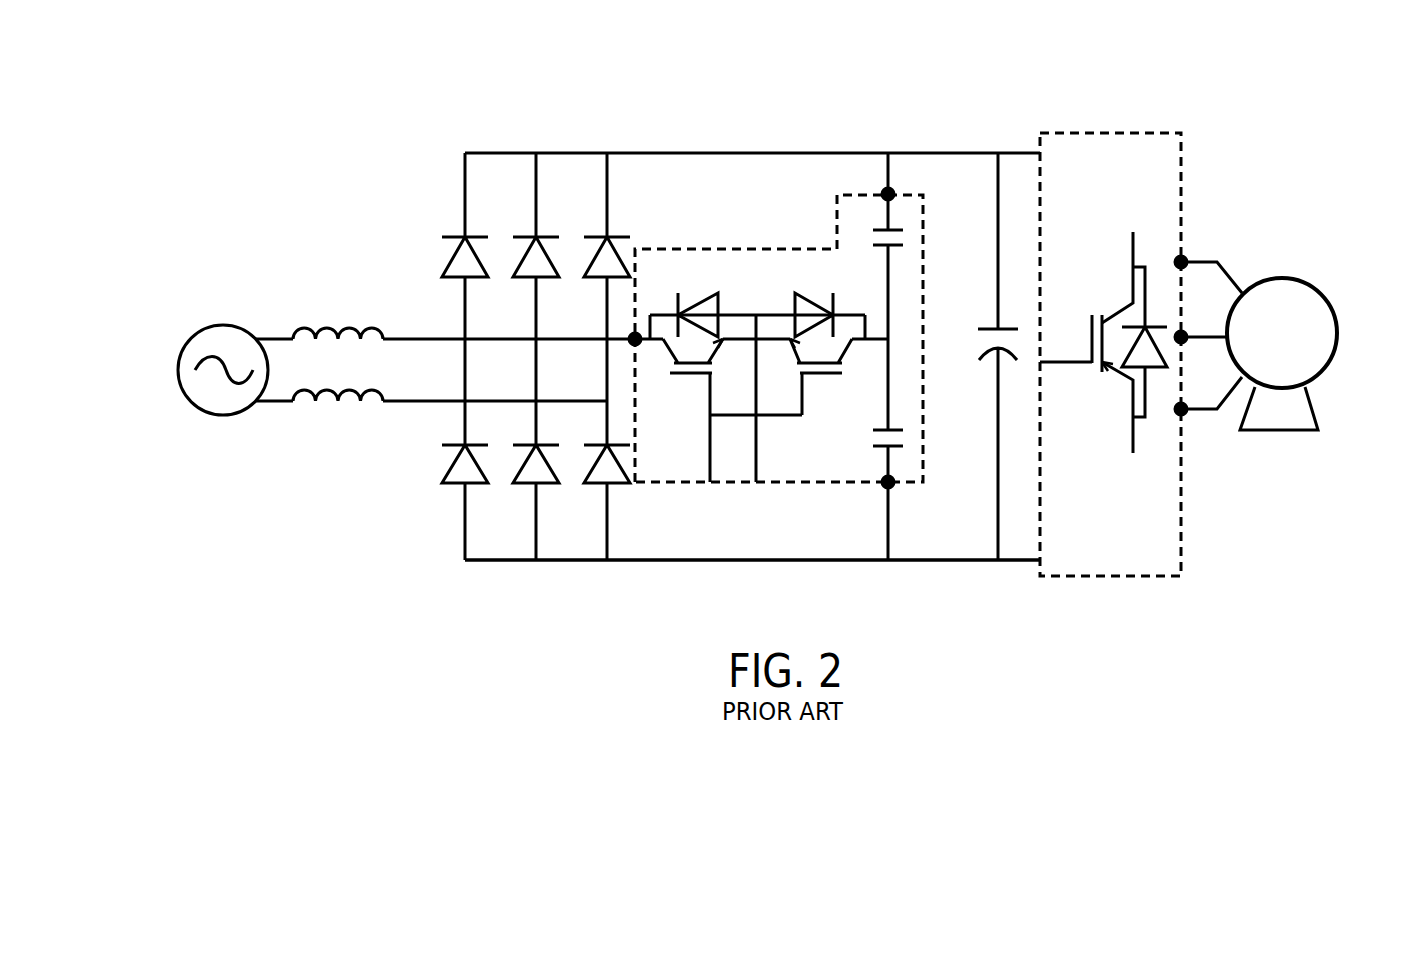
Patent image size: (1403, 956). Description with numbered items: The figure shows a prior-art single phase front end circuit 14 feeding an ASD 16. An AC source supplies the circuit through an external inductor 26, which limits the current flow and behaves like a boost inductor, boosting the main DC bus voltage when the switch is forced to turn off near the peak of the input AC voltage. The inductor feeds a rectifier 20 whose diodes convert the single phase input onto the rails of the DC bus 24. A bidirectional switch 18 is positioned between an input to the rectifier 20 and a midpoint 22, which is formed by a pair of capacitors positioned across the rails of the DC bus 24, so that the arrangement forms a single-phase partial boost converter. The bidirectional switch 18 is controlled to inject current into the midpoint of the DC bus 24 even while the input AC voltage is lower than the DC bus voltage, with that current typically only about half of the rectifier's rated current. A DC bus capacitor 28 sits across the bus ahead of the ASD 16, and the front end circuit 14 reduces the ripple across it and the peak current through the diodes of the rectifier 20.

The single phase front end circuit 14 is at (700, 128).
The ASD 16 is at (1052, 60).
The bidirectional switch 18 is at (748, 220).
The rectifier 20 is at (448, 494).
The midpoint 22 is at (897, 256).
The DC bus 24 is at (650, 562).
The external inductor 26 is at (312, 316).
The DC bus capacitor 28 is at (988, 362).